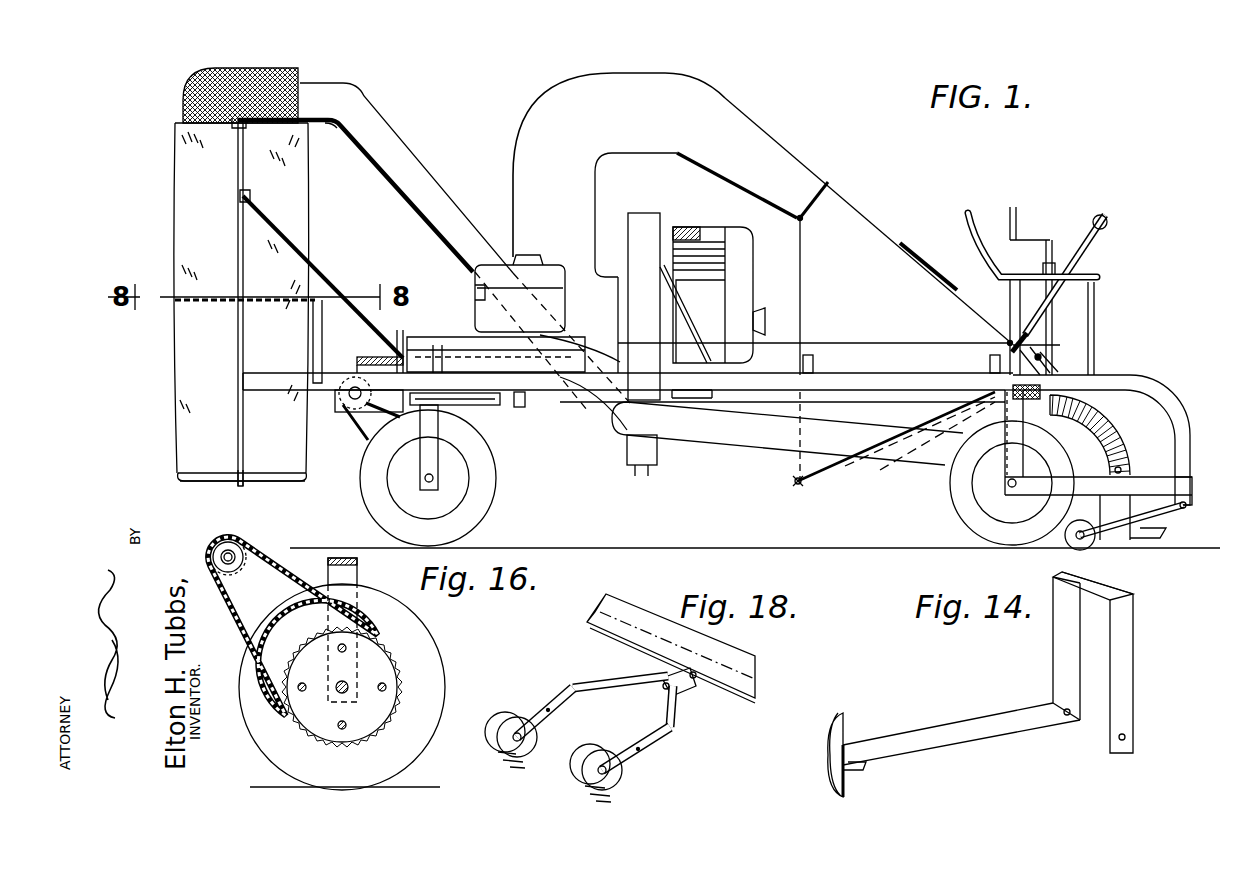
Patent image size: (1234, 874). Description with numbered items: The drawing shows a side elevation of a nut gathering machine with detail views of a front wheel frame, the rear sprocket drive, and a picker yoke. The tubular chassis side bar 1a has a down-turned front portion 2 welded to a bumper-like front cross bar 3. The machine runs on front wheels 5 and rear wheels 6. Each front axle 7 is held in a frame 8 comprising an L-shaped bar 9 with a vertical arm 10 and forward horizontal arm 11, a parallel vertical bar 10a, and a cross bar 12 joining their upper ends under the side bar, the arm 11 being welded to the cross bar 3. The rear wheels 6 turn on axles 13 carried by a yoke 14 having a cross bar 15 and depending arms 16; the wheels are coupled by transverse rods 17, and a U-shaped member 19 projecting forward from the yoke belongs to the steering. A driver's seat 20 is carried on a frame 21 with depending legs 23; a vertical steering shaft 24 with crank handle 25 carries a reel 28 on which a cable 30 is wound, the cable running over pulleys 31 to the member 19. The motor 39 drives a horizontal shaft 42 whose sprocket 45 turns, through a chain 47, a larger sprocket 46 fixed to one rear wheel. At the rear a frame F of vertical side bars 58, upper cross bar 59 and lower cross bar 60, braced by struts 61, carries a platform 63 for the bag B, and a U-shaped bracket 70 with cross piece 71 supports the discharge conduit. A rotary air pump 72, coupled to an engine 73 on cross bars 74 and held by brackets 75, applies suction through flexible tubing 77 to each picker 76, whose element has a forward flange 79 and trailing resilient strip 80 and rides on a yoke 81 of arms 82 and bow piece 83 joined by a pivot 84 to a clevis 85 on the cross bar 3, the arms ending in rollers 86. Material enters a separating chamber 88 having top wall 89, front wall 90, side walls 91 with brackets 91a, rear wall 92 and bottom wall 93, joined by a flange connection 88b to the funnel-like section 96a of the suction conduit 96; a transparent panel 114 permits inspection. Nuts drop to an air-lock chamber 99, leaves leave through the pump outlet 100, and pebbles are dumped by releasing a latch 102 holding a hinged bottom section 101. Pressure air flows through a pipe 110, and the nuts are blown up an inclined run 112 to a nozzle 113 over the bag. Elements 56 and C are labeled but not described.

In FIG. 1, the side bar 1a is at (878, 380).
In FIG. 1, the down-turned portion 2 is at (1188, 448).
In FIG. 1, the front cross bar 3 is at (1190, 490).
In FIG. 18, the front cross bar 3 is at (757, 672).
In FIG. 14, the front cross bar 3 is at (829, 755).
In FIG. 1, the front wheel 5 is at (950, 486).
In FIG. 1, the rear wheel 6 is at (497, 478).
In FIG. 16, the rear wheel 6 is at (438, 688).
In FIG. 1, the axle 7 is at (1007, 485).
In FIG. 1, the frame 8 is at (1005, 434).
In FIG. 14, the frame 8 is at (911, 725).
In FIG. 1, the bar 9 is at (1005, 458).
In FIG. 14, the bar 9 is at (1060, 621).
In FIG. 1, the vertical arm 10 is at (1022, 441).
In FIG. 14, the vertical arm 10 is at (1060, 642).
In FIG. 14, the vertical bar 10a is at (1130, 660).
In FIG. 1, the horizontal arm 11 is at (1062, 482).
In FIG. 14, the horizontal arm 11 is at (1027, 712).
In FIG. 14, the cross bar 12 is at (1126, 593).
In FIG. 1, the axle 13 is at (434, 480).
In FIG. 16, the axle 13 is at (350, 690).
In FIG. 1, the yoke 14 is at (438, 431).
In FIG. 16, the yoke 14 is at (322, 577).
In FIG. 16, the cross bar 15 is at (357, 563).
In FIG. 16, the vertical arm 16 is at (358, 615).
In FIG. 16, the transverse rod 17 is at (384, 683).
In FIG. 1, the U-shaped member 19 is at (490, 410).
In FIG. 1, the driver's seat 20 is at (1105, 278).
In FIG. 1, the frame 21 is at (1102, 300).
In FIG. 1, the leg 23 is at (1097, 336).
In FIG. 1, the vertical shaft 24 is at (1058, 252).
In FIG. 1, the crank handle 25 is at (1018, 222).
In FIG. 1, the reel 28 is at (1045, 377).
In FIG. 1, the cable 30 is at (937, 435).
In FIG. 1, the pulley 31 is at (520, 408).
In FIG. 1, the motor 39 is at (567, 290).
In FIG. 1, the horizontal shaft 42 is at (226, 560).
In FIG. 16, the horizontal shaft 42 is at (222, 562).
In FIG. 16, the sprocket 45 is at (213, 560).
In FIG. 16, the sprocket 46 is at (298, 690).
In FIG. 16, the chain 47 is at (218, 583).
In FIG. 1, the control lever 56 is at (1102, 256).
In FIG. 1, the vertical side bar 58 is at (238, 230).
In FIG. 1, the upper cross bar 59 is at (232, 128).
In FIG. 1, the lower cross bar 60 is at (236, 485).
In FIG. 1, the reinforcing strut 61 is at (312, 265).
In FIG. 1, the bag supporting platform 63 is at (282, 482).
In FIG. 1, the U-shaped bracket 70 is at (320, 117).
In FIG. 1, the cross piece 71 is at (334, 127).
In FIG. 1, the rotary air pump 72 is at (638, 213).
In FIG. 1, the internal combustion engine 73 is at (714, 227).
In FIG. 1, the cross bar 74 is at (705, 398).
In FIG. 1, the bracket 75 is at (690, 318).
In FIG. 1, the picker 76 is at (1122, 467).
In FIG. 1, the flexible tubing 77 is at (1115, 428).
In FIG. 1, the horizontal flange 79 is at (1145, 543).
In FIG. 1, the resilient flange 80 is at (1110, 545).
In FIG. 1, the yoke 81 is at (1152, 521).
In FIG. 18, the yoke 81 is at (578, 686).
In FIG. 18, the arm 82 is at (548, 702).
In FIG. 18, the bow piece 83 is at (620, 683).
In FIG. 18, the pivot 84 is at (663, 690).
In FIG. 18, the clevis 85 is at (684, 690).
In FIG. 1, the roller 86 is at (1070, 545).
In FIG. 18, the roller 86 is at (592, 762).
In FIG. 1, the separating chamber 88 is at (882, 240).
In FIG. 1, the flange connection 88b is at (830, 180).
In FIG. 1, the top wall 89 is at (872, 220).
In FIG. 1, the front wall 90 is at (1007, 343).
In FIG. 1, the side wall 91 is at (736, 325).
In FIG. 1, the bracket 91a is at (814, 360).
In FIG. 1, the rear wall 92 is at (768, 320).
In FIG. 1, the bottom wall 93 is at (830, 465).
In FIG. 1, the suction conduit 96 is at (640, 150).
In FIG. 1, the funnel-like section 96a is at (802, 170).
In FIG. 1, the air-lock chamber 99 is at (993, 412).
In FIG. 1, the outlet 100 is at (658, 458).
In FIG. 1, the hinged lower section 101 is at (802, 484).
In FIG. 1, the latch 102 is at (776, 490).
In FIG. 1, the pipe 110 is at (787, 438).
In FIG. 1, the upwardly inclined run 112 is at (428, 195).
In FIG. 1, the nut discharging nozzle 113 is at (333, 82).
In FIG. 1, the transparent panel 114 is at (936, 263).
In FIG. 1, the bag B is at (308, 205).
In FIG. 1, the cover C is at (918, 378).
In FIG. 1, the supporting frame F is at (254, 203).